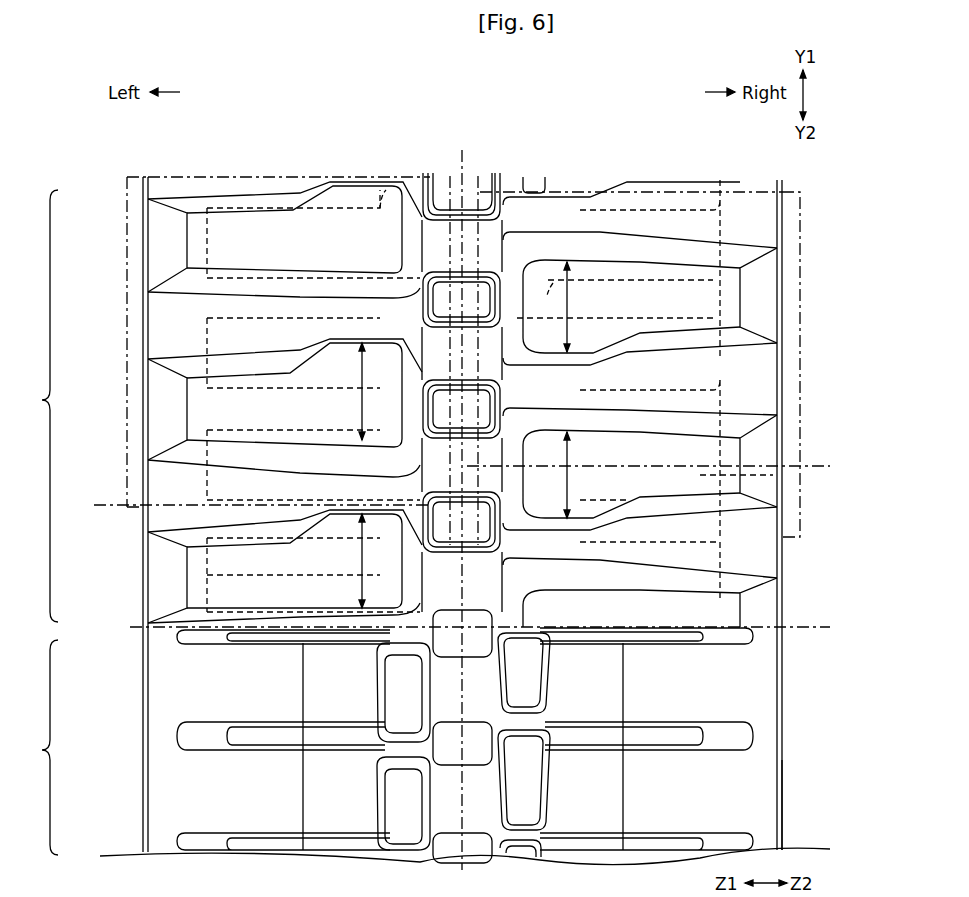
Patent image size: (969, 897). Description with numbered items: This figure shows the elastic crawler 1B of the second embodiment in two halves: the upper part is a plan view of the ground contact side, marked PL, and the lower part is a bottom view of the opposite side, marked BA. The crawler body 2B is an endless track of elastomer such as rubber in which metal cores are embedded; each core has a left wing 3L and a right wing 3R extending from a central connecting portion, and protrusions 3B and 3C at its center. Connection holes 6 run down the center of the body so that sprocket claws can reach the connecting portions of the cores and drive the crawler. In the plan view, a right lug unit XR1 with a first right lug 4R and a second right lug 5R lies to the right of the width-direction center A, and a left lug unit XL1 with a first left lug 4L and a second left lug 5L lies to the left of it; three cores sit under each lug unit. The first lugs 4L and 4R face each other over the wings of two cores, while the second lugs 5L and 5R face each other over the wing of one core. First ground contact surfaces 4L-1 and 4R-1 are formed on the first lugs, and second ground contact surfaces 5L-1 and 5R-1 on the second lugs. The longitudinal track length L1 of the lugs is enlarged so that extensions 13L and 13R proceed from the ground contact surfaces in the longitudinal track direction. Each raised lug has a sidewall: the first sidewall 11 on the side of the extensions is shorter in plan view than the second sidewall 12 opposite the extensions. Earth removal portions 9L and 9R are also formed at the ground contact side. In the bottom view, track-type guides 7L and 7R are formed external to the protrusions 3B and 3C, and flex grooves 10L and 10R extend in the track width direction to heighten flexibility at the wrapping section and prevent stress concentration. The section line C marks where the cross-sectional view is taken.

The elastic crawler 1B is at (700, 134).
The crawler body 2B is at (815, 799).
The protrusion 3B is at (400, 808).
The protrusion 3C is at (523, 808).
The left wing 3L is at (207, 327).
The right wing 3R is at (720, 180).
The first left lug 4L is at (180, 398).
The first ground contact surface 4L-1 is at (200, 412).
The first right lug 4R is at (717, 306).
The first ground contact surface 4R-1 is at (707, 288).
The second left lug 5L is at (180, 562).
The second ground contact surface 5L-1 is at (148, 623).
The second right lug 5R is at (707, 487).
The second ground contact surface 5R-1 is at (600, 510).
The connection hole 6 is at (442, 268).
The guide 7L is at (320, 690).
The guide 7R is at (605, 690).
The earth removal portion 9L is at (165, 357).
The earth removal portion 9R is at (753, 228).
The flex groove 10L is at (240, 737).
The flex groove 10R is at (688, 740).
The first sidewall 11 is at (657, 240).
The second sidewall 12 is at (358, 345).
The extension 13L is at (335, 340).
The extension 13R is at (600, 350).
The center A is at (474, 152).
The C-C line C is at (830, 440).
The longitudinal track length L1 is at (466, 435).
The plan view PL is at (39, 406).
The bottom view BA is at (38, 747).
The left lug unit XL1 is at (113, 200).
The right lug unit XR1 is at (809, 201).